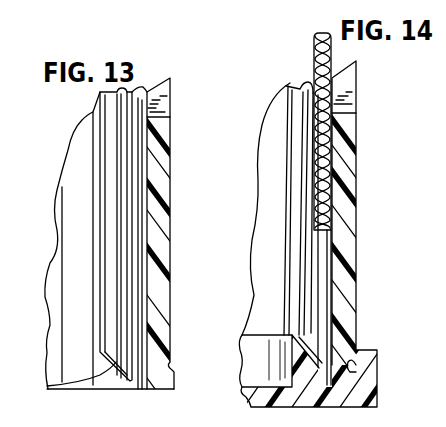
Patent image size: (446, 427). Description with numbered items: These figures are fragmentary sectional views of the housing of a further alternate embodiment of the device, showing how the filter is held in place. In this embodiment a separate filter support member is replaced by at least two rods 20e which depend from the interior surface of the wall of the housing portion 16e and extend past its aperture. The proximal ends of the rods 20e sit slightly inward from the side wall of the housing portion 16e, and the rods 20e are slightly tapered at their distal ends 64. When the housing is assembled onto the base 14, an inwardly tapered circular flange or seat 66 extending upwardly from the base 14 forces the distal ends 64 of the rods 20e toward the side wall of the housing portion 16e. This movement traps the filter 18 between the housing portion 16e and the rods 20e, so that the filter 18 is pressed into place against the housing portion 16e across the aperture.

In FIG. 14, the base 14 is at (378, 400).
In FIG. 13, the housing portion 16e is at (166, 150).
In FIG. 14, the housing portion 16e is at (358, 137).
In FIG. 14, the filter 18 is at (314, 40).
In FIG. 13, the rods 20e is at (112, 185).
In FIG. 14, the rods 20e is at (297, 187).
In FIG. 13, the distal ends 64 is at (47, 386).
In FIG. 14, the distal ends 64 is at (305, 268).
In FIG. 14, the inwardly tapered circular flange or seat 66 is at (289, 367).